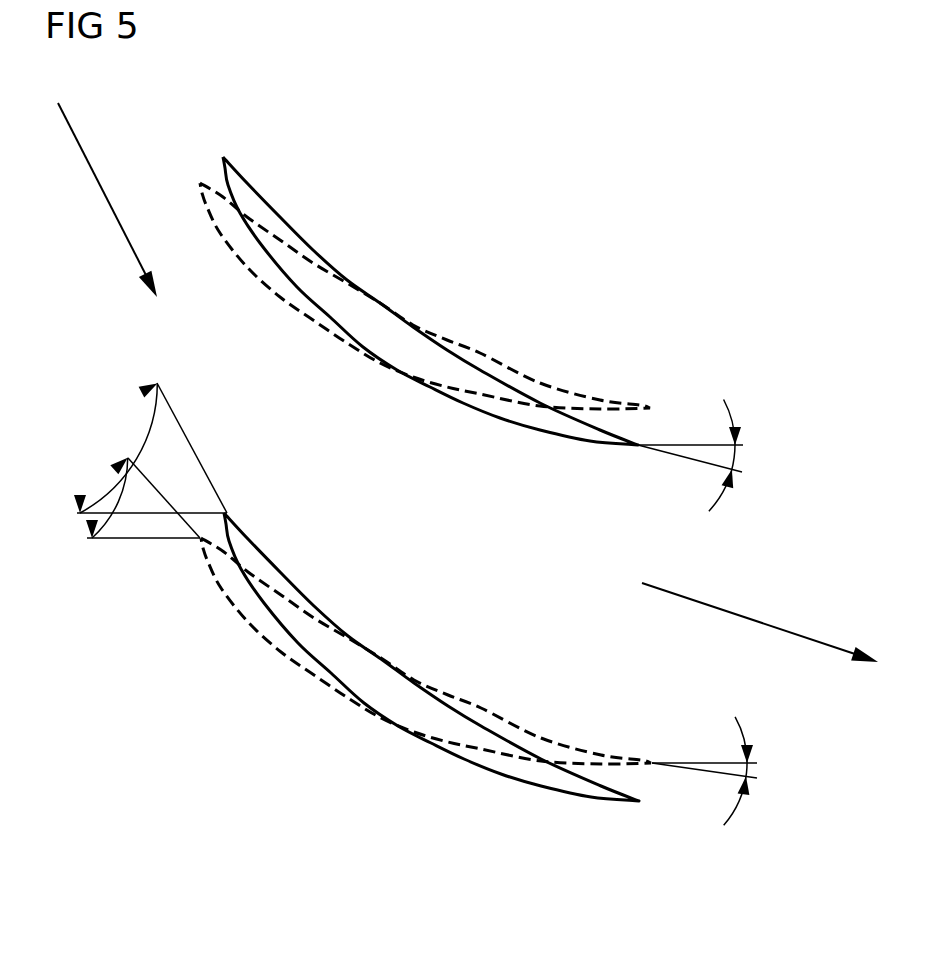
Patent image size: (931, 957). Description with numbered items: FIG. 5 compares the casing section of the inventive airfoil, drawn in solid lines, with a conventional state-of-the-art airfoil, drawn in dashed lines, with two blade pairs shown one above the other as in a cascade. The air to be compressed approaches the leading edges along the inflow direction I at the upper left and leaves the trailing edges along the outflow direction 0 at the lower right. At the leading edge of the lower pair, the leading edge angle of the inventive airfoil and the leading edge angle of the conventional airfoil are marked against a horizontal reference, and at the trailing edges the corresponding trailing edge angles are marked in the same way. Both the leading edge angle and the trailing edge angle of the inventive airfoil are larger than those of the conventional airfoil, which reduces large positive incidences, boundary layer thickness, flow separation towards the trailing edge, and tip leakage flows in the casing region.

The inflow direction I is at (100, 188).
The outflow direction 0 is at (745, 617).